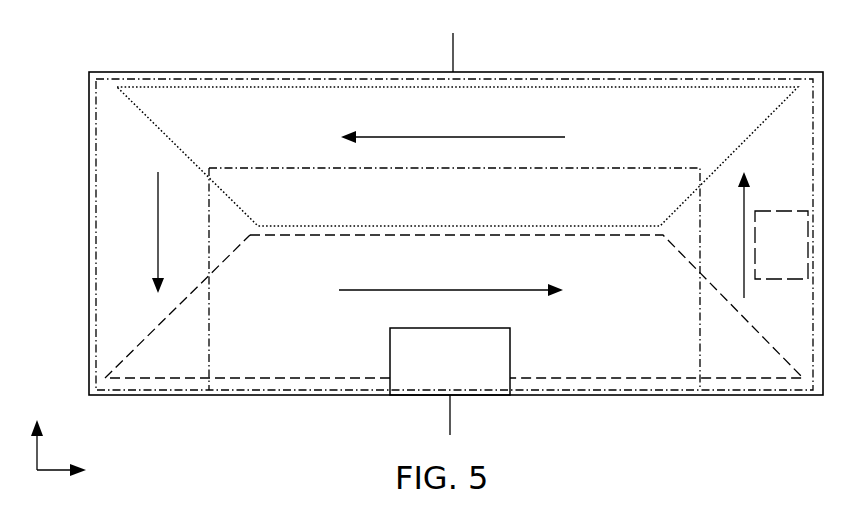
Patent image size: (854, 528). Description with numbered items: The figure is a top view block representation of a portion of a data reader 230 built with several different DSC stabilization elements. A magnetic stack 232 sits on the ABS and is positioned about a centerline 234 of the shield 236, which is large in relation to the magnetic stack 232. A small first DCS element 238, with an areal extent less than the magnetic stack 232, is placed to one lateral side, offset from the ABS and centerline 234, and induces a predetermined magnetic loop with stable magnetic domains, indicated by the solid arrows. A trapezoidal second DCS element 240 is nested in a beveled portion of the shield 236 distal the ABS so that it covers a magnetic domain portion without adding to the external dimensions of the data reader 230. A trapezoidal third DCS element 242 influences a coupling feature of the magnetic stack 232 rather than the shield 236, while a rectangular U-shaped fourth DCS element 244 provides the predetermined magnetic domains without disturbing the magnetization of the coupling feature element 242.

The data reader 230 is at (133, 52).
The magnetic stack 232 is at (467, 371).
The centerline 234 is at (453, 60).
The shield 236 is at (89, 266).
The first DCS element 238 is at (797, 255).
The second DCS element 240 is at (724, 98).
The third DCS element 242 is at (467, 259).
The fourth DCS element 244 is at (97, 289).